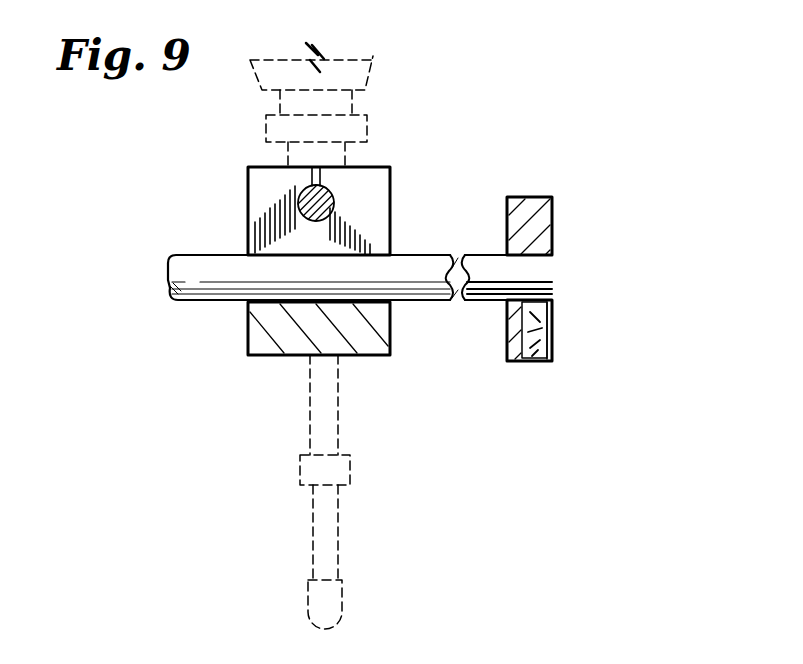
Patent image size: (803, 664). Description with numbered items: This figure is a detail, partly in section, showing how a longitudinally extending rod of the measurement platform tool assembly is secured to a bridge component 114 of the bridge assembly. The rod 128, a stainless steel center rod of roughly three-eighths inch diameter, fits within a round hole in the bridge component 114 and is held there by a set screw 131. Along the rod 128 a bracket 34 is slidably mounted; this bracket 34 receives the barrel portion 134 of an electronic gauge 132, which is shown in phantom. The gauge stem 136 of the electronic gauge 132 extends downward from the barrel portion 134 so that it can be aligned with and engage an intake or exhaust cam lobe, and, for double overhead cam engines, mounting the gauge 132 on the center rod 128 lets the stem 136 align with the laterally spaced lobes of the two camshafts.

The electronic gauge 132 is at (374, 105).
The bracket 34 is at (389, 199).
The rod 128 is at (483, 262).
The bridge component 114 is at (546, 232).
The set screw 131 is at (527, 362).
The barrel portion 134 is at (340, 430).
The gauge stem 136 is at (340, 605).